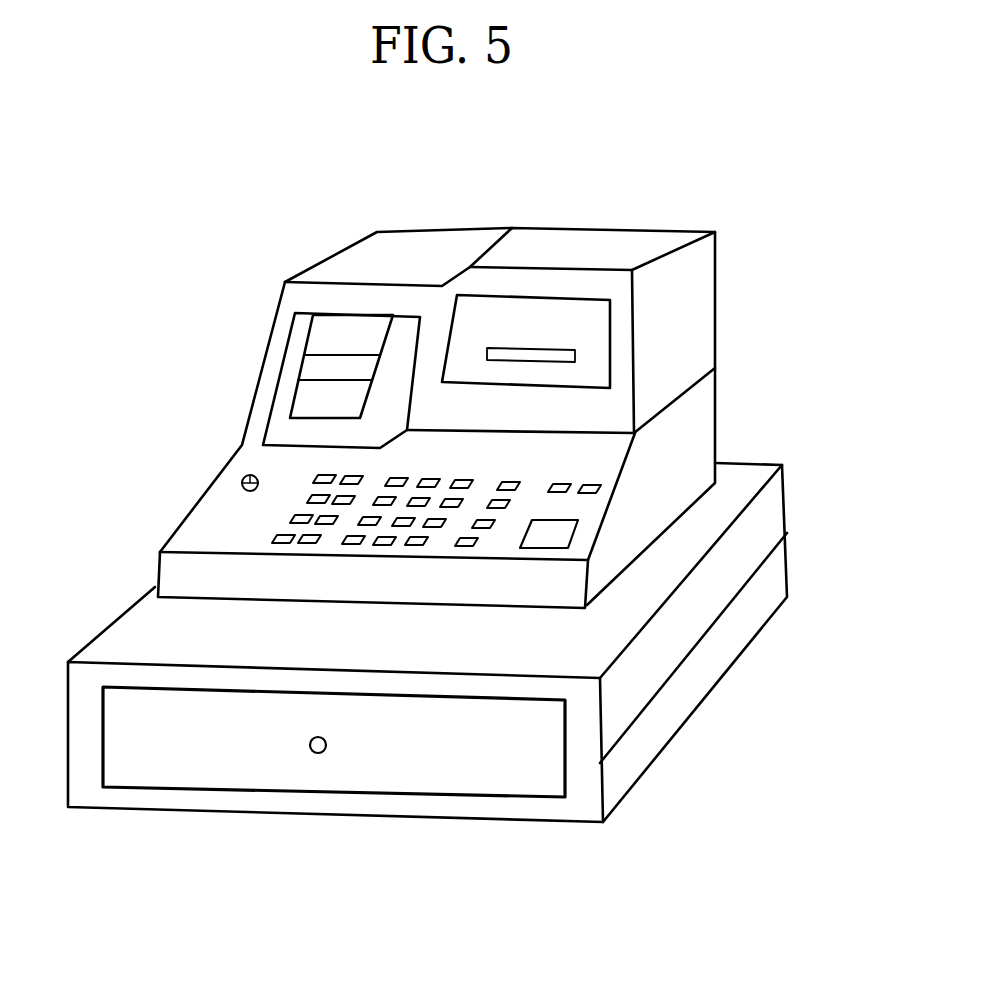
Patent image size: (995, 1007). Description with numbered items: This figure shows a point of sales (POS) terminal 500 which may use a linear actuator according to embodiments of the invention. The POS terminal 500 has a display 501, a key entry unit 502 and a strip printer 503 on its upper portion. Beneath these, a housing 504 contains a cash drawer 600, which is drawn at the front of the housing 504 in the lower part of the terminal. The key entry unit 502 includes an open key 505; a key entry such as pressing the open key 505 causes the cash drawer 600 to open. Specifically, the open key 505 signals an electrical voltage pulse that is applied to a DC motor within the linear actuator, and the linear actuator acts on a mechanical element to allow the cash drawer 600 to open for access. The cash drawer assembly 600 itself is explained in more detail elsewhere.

The point of sales terminal 500 is at (752, 764).
The display 501 is at (577, 335).
The key entry unit 502 is at (207, 525).
The strip printer 503 is at (335, 345).
The housing 504 is at (785, 502).
The open key 505 is at (552, 545).
The cash drawer 600 is at (392, 753).